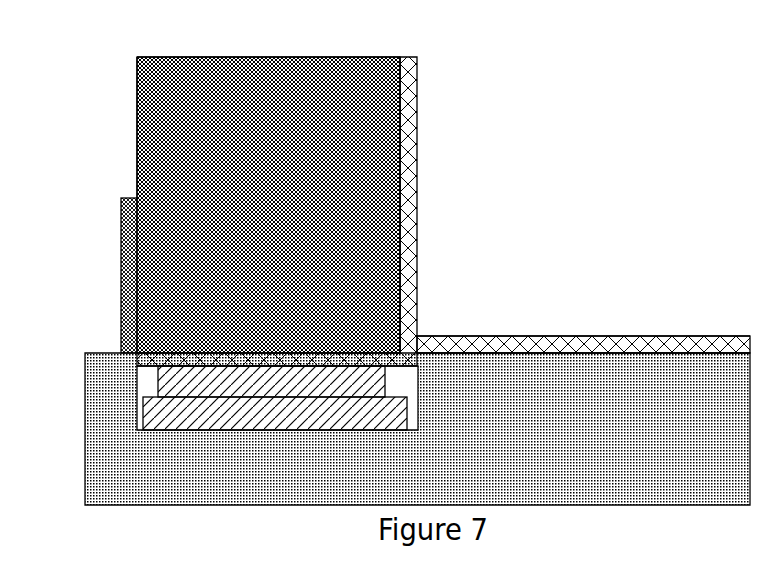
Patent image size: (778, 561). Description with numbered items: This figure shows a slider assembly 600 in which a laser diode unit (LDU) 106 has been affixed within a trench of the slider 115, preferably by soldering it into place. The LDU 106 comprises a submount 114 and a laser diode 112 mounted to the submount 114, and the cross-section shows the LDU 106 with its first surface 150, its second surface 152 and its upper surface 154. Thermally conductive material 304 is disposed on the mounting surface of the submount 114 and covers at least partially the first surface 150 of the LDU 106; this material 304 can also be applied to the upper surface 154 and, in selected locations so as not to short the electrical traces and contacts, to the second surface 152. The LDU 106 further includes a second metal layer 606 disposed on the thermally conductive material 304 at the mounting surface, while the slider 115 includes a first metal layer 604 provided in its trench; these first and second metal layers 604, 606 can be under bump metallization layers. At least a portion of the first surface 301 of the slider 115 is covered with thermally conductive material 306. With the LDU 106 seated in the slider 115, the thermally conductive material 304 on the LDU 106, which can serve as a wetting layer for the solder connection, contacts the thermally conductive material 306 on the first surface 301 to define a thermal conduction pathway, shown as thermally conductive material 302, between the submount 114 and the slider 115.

The laser diode unit 106 is at (109, 78).
The laser diode 112 is at (121, 253).
The submount 114 is at (268, 205).
The slider 115 is at (417, 429).
The first surface 150 is at (398, 128).
The second surface 152 is at (137, 137).
The upper surface 154 is at (288, 57).
The first surface 301 is at (547, 355).
The thermally conductive material 302 is at (433, 335).
The thermally conductive material 304 is at (417, 190).
The thermally conductive material 306 is at (671, 336).
The slider assembly 600 is at (584, 166).
The first metal layer 604 is at (322, 430).
The second metal layer 606 is at (158, 384).